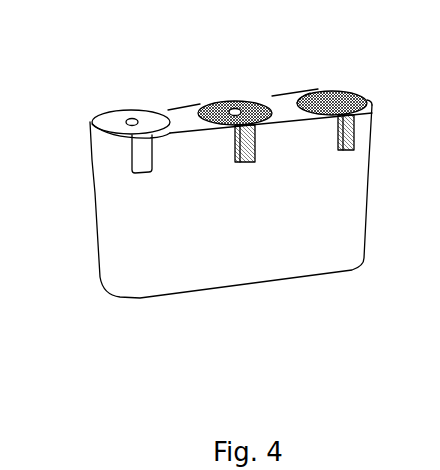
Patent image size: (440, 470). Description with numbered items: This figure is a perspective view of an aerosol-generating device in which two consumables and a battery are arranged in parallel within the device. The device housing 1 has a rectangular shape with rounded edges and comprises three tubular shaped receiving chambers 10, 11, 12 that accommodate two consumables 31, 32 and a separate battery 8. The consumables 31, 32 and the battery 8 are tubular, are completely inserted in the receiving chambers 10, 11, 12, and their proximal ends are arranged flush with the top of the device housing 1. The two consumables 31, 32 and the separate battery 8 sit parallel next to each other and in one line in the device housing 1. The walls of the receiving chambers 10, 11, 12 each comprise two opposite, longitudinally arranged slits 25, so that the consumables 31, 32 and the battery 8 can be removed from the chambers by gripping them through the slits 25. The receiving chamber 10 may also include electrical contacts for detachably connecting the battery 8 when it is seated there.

The device housing 1 is at (335, 230).
The battery 8 is at (338, 92).
The receiving chamber 10 is at (92, 123).
The receiving chamber 11 is at (208, 104).
The receiving chamber 12 is at (300, 98).
The slits 25 is at (118, 108).
The consumable 31 is at (141, 112).
The consumable 32 is at (240, 102).